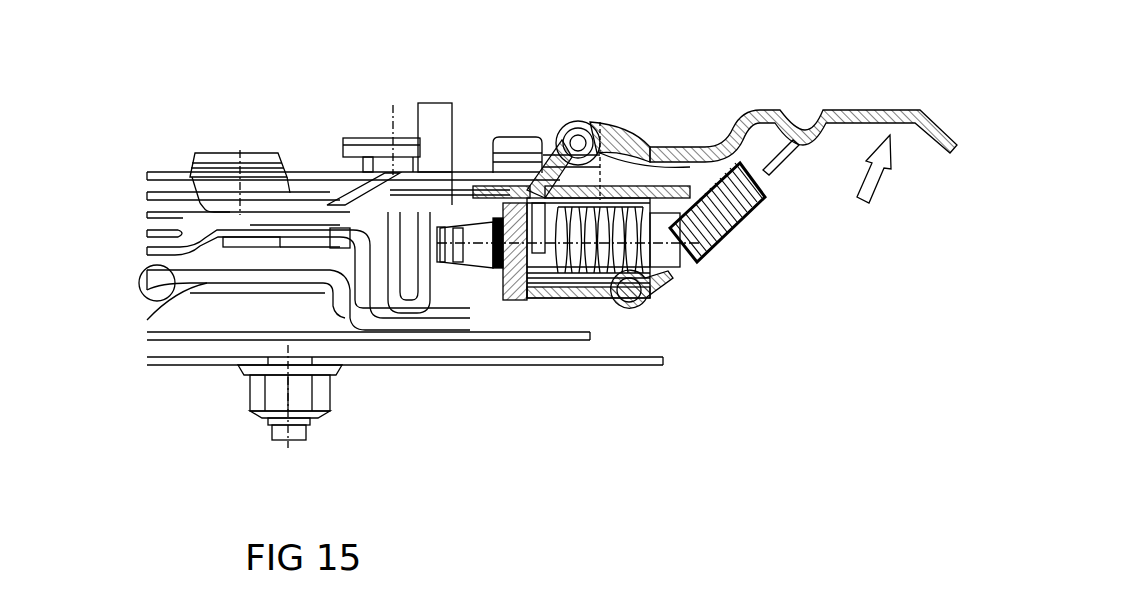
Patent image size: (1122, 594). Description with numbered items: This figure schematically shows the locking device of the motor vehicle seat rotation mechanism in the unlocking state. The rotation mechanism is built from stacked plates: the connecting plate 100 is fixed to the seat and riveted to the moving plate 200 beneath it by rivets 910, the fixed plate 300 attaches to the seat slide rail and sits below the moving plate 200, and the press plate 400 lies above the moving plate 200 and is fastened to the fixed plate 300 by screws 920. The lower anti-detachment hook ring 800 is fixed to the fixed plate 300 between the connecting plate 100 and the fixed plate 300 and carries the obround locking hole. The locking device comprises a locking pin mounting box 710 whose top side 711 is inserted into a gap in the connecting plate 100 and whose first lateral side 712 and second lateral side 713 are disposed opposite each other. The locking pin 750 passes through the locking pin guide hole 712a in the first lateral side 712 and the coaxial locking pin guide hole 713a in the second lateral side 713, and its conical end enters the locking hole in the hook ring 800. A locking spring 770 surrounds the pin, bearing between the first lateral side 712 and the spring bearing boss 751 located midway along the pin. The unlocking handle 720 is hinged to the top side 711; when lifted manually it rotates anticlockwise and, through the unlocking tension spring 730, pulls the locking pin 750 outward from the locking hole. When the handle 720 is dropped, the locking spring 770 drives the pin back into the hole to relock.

The connecting plate 100 is at (760, 63).
The moving plate 200 is at (230, 225).
The fixed plate 300 is at (220, 278).
The press plate 400 is at (267, 193).
The locking pin mounting box 710 is at (628, 315).
The top side 711 is at (607, 140).
The first lateral side 712 is at (653, 270).
The locking pin guide hole 712a is at (648, 190).
The second lateral side 713 is at (512, 300).
The locking pin guide hole 713a is at (490, 220).
The unlocking handle 720 is at (893, 123).
The unlocking tension spring 730 is at (757, 222).
The locking pin 750 is at (358, 178).
The spring bearing boss 751 is at (507, 165).
The locking spring 770 is at (585, 255).
The lower anti-detachment hook ring 800 is at (460, 330).
The rivet 910 is at (190, 172).
The screw 920 is at (272, 393).